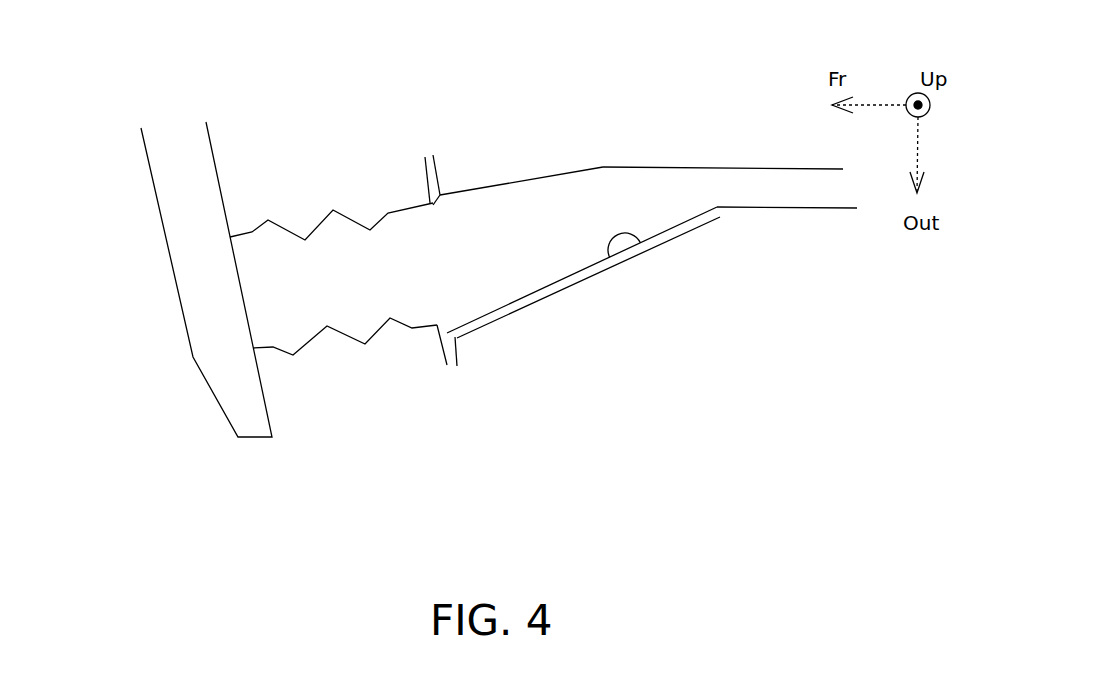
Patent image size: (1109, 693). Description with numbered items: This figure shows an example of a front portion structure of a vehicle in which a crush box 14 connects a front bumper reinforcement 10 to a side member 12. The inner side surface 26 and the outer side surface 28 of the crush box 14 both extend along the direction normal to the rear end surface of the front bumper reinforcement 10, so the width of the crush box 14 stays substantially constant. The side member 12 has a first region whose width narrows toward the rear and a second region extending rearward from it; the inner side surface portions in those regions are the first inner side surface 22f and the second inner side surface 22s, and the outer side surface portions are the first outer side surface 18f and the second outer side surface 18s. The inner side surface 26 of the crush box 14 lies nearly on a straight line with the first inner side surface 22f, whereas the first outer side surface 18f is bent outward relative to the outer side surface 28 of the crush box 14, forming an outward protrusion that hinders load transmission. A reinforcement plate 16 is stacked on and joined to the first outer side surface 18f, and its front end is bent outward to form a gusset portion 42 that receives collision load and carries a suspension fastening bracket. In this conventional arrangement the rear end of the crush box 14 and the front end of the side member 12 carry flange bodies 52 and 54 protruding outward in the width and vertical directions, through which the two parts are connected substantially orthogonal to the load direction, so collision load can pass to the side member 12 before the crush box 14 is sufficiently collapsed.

The front bumper R/F 10 is at (168, 252).
The side member 12 is at (667, 143).
The crush box 14 is at (300, 188).
The reinforcement plate 16 is at (582, 285).
The first outer side surface 18f is at (645, 252).
The second outer side surface 18s is at (800, 210).
The first inner side surface 22f is at (518, 180).
The second inner side surface 22s is at (738, 167).
The inner side surface 26 is at (262, 220).
The outer side surface 28 is at (307, 347).
The gusset portion 42 is at (463, 368).
The flange body 52 is at (425, 172).
The flange body 54 is at (440, 165).